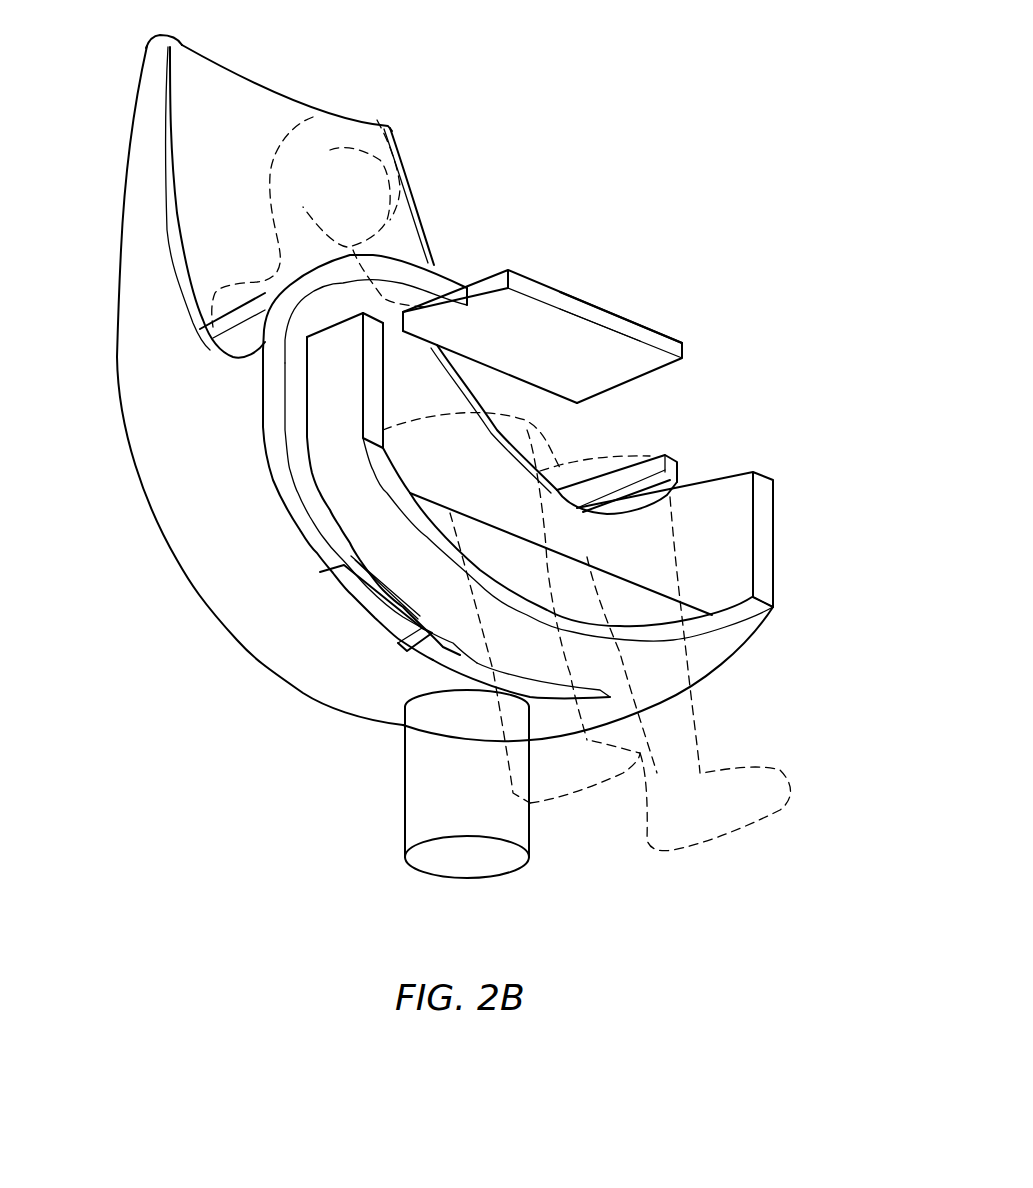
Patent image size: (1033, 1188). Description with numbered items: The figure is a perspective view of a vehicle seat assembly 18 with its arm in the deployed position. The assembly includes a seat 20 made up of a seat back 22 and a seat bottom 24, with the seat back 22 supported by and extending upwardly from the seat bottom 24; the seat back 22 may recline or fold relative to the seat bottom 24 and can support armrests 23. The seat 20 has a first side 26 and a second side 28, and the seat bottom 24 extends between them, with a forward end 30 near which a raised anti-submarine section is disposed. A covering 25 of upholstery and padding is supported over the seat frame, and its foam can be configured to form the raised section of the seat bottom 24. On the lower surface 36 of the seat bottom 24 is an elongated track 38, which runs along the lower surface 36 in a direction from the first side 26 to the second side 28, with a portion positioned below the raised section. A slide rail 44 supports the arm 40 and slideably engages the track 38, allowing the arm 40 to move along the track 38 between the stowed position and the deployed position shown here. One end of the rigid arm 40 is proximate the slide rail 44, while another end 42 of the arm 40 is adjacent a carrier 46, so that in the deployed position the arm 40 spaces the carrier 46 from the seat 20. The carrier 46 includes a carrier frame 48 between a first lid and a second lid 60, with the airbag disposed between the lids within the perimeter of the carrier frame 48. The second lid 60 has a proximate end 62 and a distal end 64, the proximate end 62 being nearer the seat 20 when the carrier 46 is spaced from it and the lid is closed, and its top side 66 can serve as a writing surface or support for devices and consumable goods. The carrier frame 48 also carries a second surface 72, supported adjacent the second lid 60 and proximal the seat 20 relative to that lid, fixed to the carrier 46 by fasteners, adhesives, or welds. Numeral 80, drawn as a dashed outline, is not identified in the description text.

The vehicle seat assembly 18 is at (654, 146).
The seat 20 is at (104, 147).
The seat back 22 is at (206, 105).
The armrests 23 is at (218, 333).
The seat bottom 24 is at (728, 663).
The covering 25 is at (238, 207).
The first side 26 is at (190, 470).
The second side 28 is at (719, 536).
The forward end 30 is at (620, 604).
The lower surface 36 is at (369, 682).
The elongated track 38 is at (516, 688).
The arm 40 is at (262, 425).
The another end of the arm 42 is at (472, 290).
The slide rail 44 is at (338, 600).
The carrier 46 is at (653, 282).
The carrier frame 48 is at (688, 350).
The second lid 60 is at (633, 360).
The proximate end 62 is at (455, 318).
The distal end 64 is at (560, 293).
The top side 66 is at (573, 350).
The second surface 72 is at (565, 385).
The heel 80 is at (398, 213).